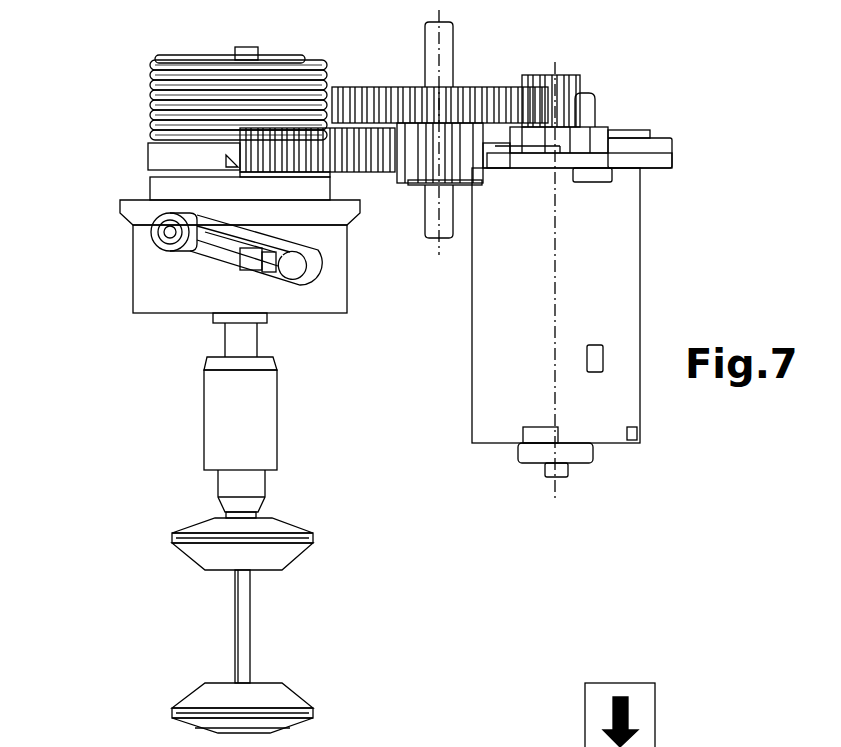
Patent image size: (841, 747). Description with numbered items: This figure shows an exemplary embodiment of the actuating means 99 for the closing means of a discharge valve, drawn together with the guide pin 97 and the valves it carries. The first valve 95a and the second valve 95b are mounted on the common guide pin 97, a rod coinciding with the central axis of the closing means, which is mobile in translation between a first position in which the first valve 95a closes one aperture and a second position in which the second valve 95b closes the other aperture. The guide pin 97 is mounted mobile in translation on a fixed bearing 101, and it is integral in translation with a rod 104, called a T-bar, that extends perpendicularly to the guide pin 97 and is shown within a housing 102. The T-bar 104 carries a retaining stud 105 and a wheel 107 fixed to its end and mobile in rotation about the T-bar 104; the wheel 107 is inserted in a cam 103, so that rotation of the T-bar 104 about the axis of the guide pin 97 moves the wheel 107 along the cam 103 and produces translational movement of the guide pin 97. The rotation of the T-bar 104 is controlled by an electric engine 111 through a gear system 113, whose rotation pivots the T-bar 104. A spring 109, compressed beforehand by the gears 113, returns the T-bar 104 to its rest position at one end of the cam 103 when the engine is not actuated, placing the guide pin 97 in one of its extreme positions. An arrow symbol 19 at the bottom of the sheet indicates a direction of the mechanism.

The actuating means 99 is at (609, 257).
The spring 109 is at (150, 70).
The gear system 113 is at (385, 85).
The electric engine 111 is at (620, 242).
The wheel 107 is at (127, 222).
The retaining stud 105 is at (160, 232).
The cam 103 is at (318, 262).
The T-bar 104 is at (209, 233).
The housing 102 is at (197, 259).
The fixed bearing 101 is at (218, 406).
The first valve 95a is at (215, 560).
The guide pin 97 is at (245, 608).
The second valve 95b is at (282, 702).
The direction indicator 19 is at (723, 746).